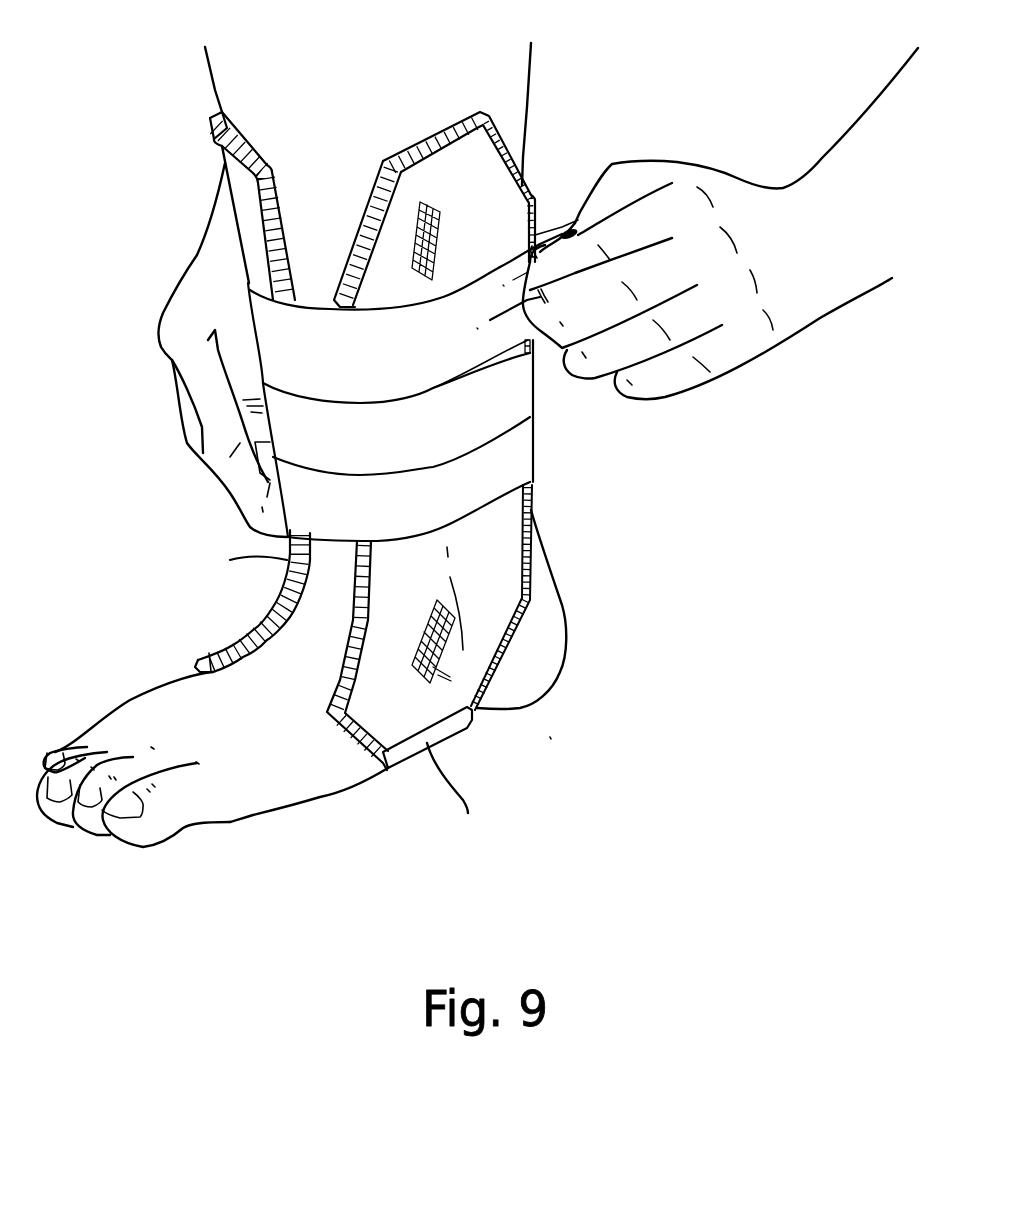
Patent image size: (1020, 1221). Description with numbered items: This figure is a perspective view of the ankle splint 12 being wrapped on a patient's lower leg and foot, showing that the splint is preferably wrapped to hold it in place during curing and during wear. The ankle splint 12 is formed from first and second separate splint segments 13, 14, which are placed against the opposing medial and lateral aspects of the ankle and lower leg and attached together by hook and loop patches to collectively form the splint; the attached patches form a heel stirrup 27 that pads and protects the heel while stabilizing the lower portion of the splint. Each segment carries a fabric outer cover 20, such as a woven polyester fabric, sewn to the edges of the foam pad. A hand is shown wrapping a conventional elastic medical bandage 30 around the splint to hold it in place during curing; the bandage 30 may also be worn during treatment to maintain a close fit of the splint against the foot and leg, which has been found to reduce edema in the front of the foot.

The ankle splint 12 is at (628, 132).
The first splint segment 13 is at (512, 233).
The second splint segment 14 is at (230, 560).
The fabric outer cover 20 is at (485, 158).
The heel stirrup 27 is at (427, 747).
The elastic medical bandage 30 is at (277, 415).